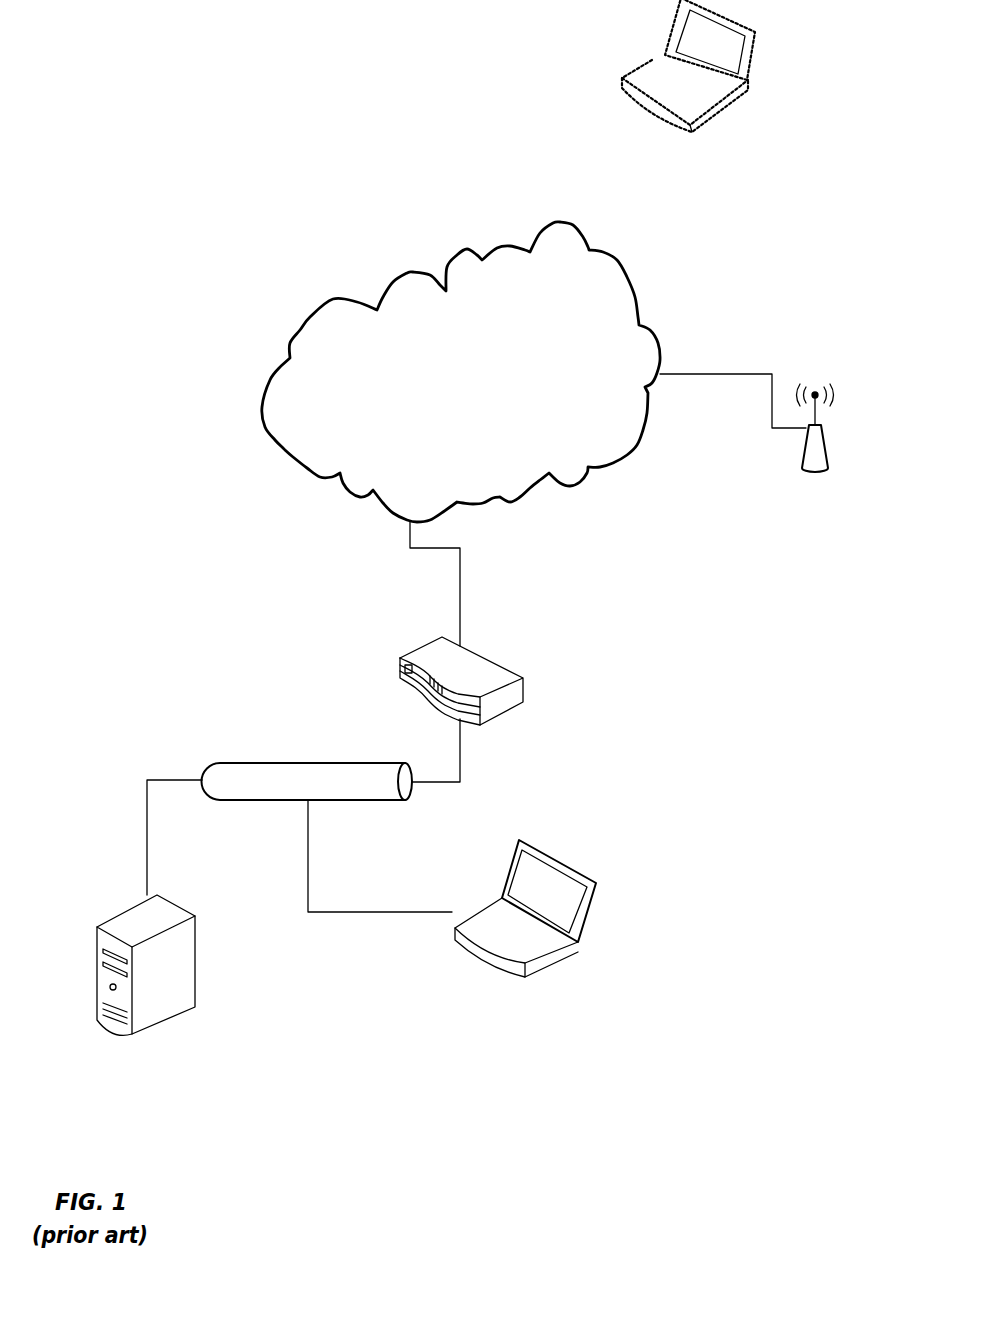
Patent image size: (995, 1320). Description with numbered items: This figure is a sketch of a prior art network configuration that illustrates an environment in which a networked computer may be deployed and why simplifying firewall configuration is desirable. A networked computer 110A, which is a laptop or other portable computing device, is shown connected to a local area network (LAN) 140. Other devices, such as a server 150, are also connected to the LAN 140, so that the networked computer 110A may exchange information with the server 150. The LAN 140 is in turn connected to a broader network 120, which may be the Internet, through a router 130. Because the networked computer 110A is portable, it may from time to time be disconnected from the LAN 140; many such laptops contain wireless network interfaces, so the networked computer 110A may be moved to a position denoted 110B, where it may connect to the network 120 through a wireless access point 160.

The networked computer 110A is at (587, 920).
The position of networked computer 110B is at (760, 40).
The network 120 is at (416, 268).
The router 130 is at (465, 643).
The local area network (LAN) 140 is at (212, 762).
The server 150 is at (165, 1023).
The wireless access point 160 is at (830, 456).